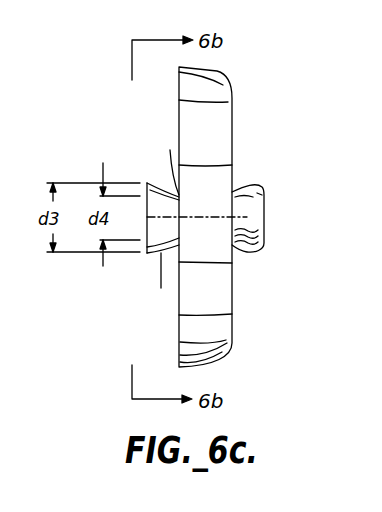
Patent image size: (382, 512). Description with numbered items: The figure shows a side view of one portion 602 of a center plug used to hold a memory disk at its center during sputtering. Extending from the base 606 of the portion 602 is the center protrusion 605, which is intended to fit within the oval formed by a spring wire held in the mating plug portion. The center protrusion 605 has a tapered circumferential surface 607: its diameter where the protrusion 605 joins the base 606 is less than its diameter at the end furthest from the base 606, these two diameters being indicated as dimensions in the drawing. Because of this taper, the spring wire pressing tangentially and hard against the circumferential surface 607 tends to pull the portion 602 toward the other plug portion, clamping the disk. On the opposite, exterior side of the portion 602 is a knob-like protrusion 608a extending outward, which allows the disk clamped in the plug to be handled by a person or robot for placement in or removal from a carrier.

The portion of plug 602 is at (231, 122).
The center protrusion 605 is at (148, 183).
The base 606 is at (170, 152).
The circumferential surface 607 is at (161, 288).
The knob-like protrusion 608a is at (266, 200).